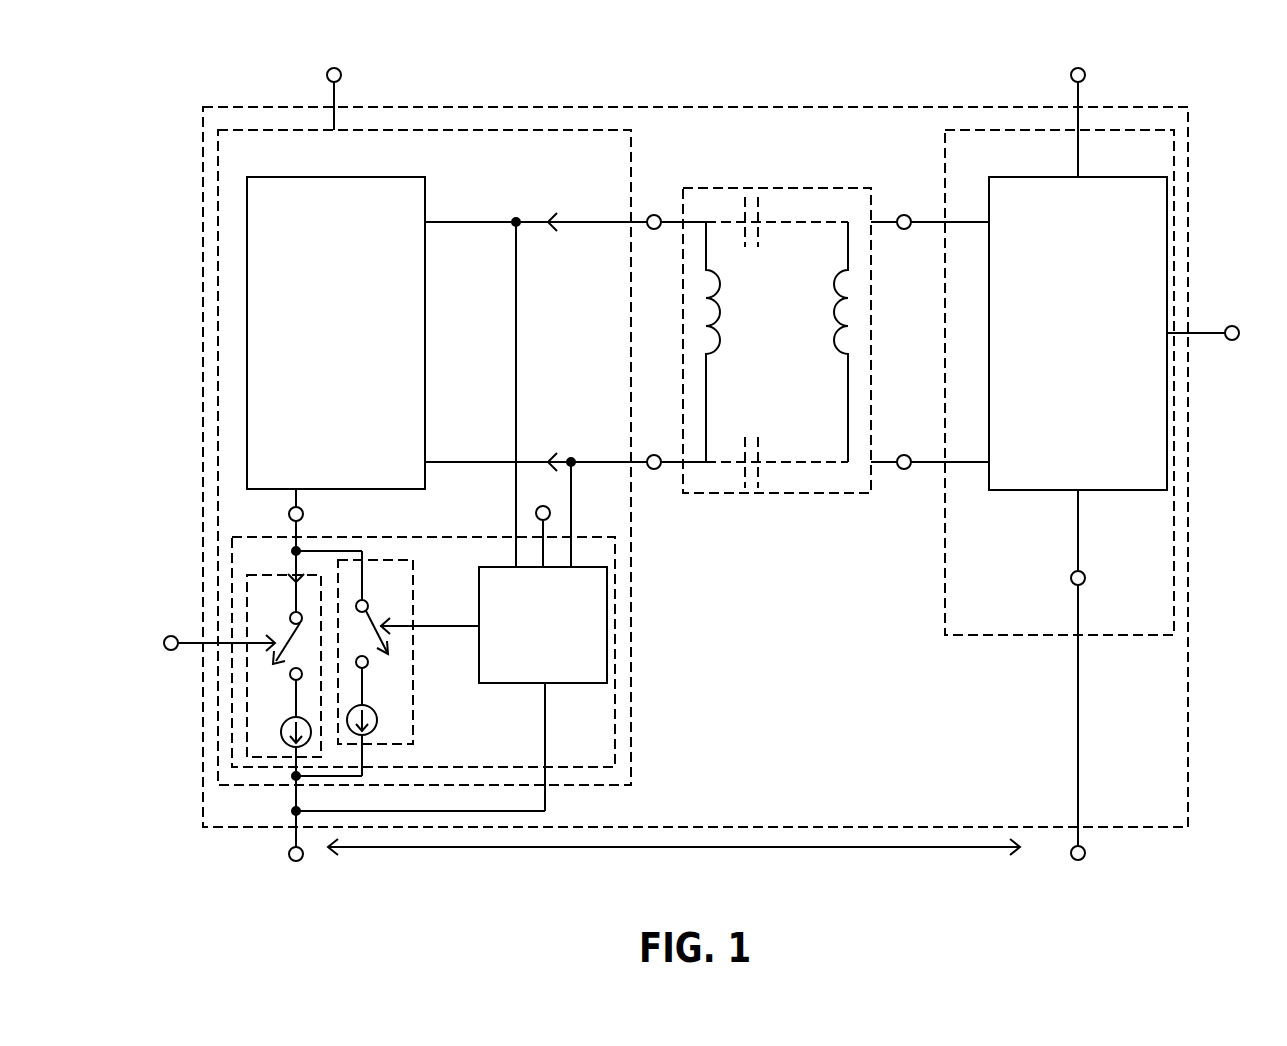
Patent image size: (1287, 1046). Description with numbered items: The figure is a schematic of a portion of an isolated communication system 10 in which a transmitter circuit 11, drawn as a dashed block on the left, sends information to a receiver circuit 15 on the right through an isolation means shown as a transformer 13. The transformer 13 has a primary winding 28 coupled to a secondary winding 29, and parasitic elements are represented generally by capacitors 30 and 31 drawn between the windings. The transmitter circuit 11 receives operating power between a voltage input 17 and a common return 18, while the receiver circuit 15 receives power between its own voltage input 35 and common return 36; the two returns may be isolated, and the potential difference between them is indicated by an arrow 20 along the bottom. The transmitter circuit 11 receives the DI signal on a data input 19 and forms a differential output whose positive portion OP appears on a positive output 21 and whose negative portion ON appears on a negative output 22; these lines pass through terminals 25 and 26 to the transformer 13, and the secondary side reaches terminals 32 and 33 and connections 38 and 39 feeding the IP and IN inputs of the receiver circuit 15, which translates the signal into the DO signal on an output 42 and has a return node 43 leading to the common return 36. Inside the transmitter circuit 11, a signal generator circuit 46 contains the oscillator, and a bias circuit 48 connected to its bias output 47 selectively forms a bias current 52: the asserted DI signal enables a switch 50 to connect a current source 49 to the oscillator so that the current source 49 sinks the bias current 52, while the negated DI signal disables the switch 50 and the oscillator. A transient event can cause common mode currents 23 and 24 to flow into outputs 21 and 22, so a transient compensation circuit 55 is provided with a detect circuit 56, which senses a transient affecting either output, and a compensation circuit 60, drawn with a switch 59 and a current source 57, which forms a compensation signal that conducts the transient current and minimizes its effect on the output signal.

The isolated communication system 10 is at (695, 495).
The transmitter circuit 11 is at (631, 703).
The transformer 13 is at (740, 494).
The receiver circuit 15 is at (1023, 636).
The voltage input 17 is at (341, 74).
The common return 18 is at (290, 858).
The data input 19 is at (168, 650).
The arrow 20 is at (494, 847).
The positive output 21 is at (434, 222).
The negative output 22 is at (434, 462).
The common mode current 23 is at (577, 232).
The common mode current 24 is at (548, 455).
The transmitter output terminal 25 is at (654, 215).
The transmitter output terminal 26 is at (654, 469).
The primary winding 28 is at (714, 350).
The secondary winding 29 is at (828, 340).
The capacitor 30 is at (750, 247).
The capacitor 31 is at (751, 437).
The receiver input terminal 32 is at (906, 215).
The receiver input terminal 33 is at (906, 455).
The voltage input 35 is at (1085, 74).
The common return 36 is at (1084, 857).
The receiver input line IP 38 is at (970, 222).
The receiver input line IN 39 is at (970, 462).
The output 42 is at (1237, 339).
The receiver ground node 43 is at (1085, 577).
The signal generator circuit 46 is at (425, 318).
The bias output 47 is at (303, 513).
The bias circuit 48 is at (247, 720).
The current source 49 is at (281, 727).
The switch 50 is at (290, 621).
The bias current 52 is at (305, 626).
The transient compensation circuit 55 is at (478, 537).
The detect circuit 56 is at (503, 683).
The current source 57 is at (375, 712).
The switch 59 is at (380, 618).
The compensation circuit 60 is at (413, 596).